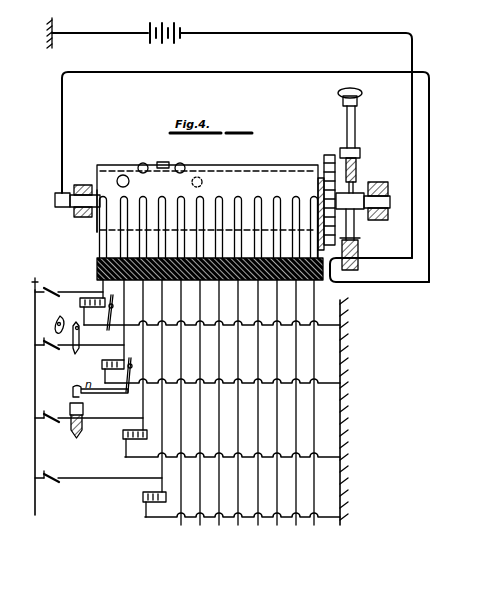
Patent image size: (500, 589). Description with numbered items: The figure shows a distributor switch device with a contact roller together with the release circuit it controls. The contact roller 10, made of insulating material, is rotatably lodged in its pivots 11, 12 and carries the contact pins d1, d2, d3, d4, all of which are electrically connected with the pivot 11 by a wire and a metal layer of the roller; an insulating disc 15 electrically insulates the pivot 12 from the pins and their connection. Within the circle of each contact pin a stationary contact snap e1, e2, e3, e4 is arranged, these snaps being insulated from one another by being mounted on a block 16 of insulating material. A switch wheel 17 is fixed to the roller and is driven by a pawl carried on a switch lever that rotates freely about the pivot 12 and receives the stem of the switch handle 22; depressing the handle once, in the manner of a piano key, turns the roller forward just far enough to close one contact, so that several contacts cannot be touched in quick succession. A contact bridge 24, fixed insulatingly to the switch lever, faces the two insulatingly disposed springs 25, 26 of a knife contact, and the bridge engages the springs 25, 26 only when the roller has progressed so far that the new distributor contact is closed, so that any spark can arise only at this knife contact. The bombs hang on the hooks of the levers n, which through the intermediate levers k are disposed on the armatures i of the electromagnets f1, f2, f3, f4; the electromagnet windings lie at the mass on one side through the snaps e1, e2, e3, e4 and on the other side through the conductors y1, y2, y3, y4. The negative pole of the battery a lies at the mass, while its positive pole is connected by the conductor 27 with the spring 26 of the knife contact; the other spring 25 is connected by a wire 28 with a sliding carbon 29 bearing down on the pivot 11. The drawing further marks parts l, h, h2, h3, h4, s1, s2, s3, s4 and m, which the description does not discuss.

The battery a is at (176, 26).
The conductor 27 is at (371, 33).
The wire 28 is at (371, 72).
The sliding carbon 29 is at (58, 200).
The pivot 11 is at (84, 204).
The contact roller 10 is at (253, 177).
The contact pin d1 is at (100, 193).
The contact pin d2 is at (122, 174).
The contact pin d3 is at (142, 162).
The contact pin d4 is at (163, 161).
The stationary contact snap e1 is at (99, 244).
The stationary contact snap e2 is at (120, 244).
The stationary contact snap e3 is at (138, 229).
The stationary contact snap e4 is at (157, 229).
The insulating disc 15 is at (318, 183).
The switch wheel 17 is at (328, 154).
The switch handle 22 is at (363, 98).
The contact bridge 24 is at (356, 172).
The pivot 12 is at (390, 203).
The spring of knife contact 26 is at (356, 228).
The spring of knife contact 25 is at (350, 237).
The block 16 is at (189, 283).
The conductor y1 is at (211, 325).
The conductor y2 is at (211, 383).
The conductor y3 is at (211, 457).
The conductor y4 is at (211, 517).
The common conductor l is at (35, 385).
The contact piece h is at (33, 277).
The contact piece h2 is at (45, 334).
The contact piece h3 is at (47, 406).
The contact piece h4 is at (49, 467).
The switch s1 is at (69, 300).
The switch s2 is at (79, 353).
The switch s3 is at (89, 428).
The switch s4 is at (98, 487).
The electromagnet f1 is at (92, 311).
The electromagnet f2 is at (102, 363).
The electromagnet f3 is at (123, 438).
The electromagnet f4 is at (143, 497).
The armature i is at (114, 310).
The lever n is at (60, 316).
The intermediate lever k is at (92, 367).
The solenoid m is at (72, 431).